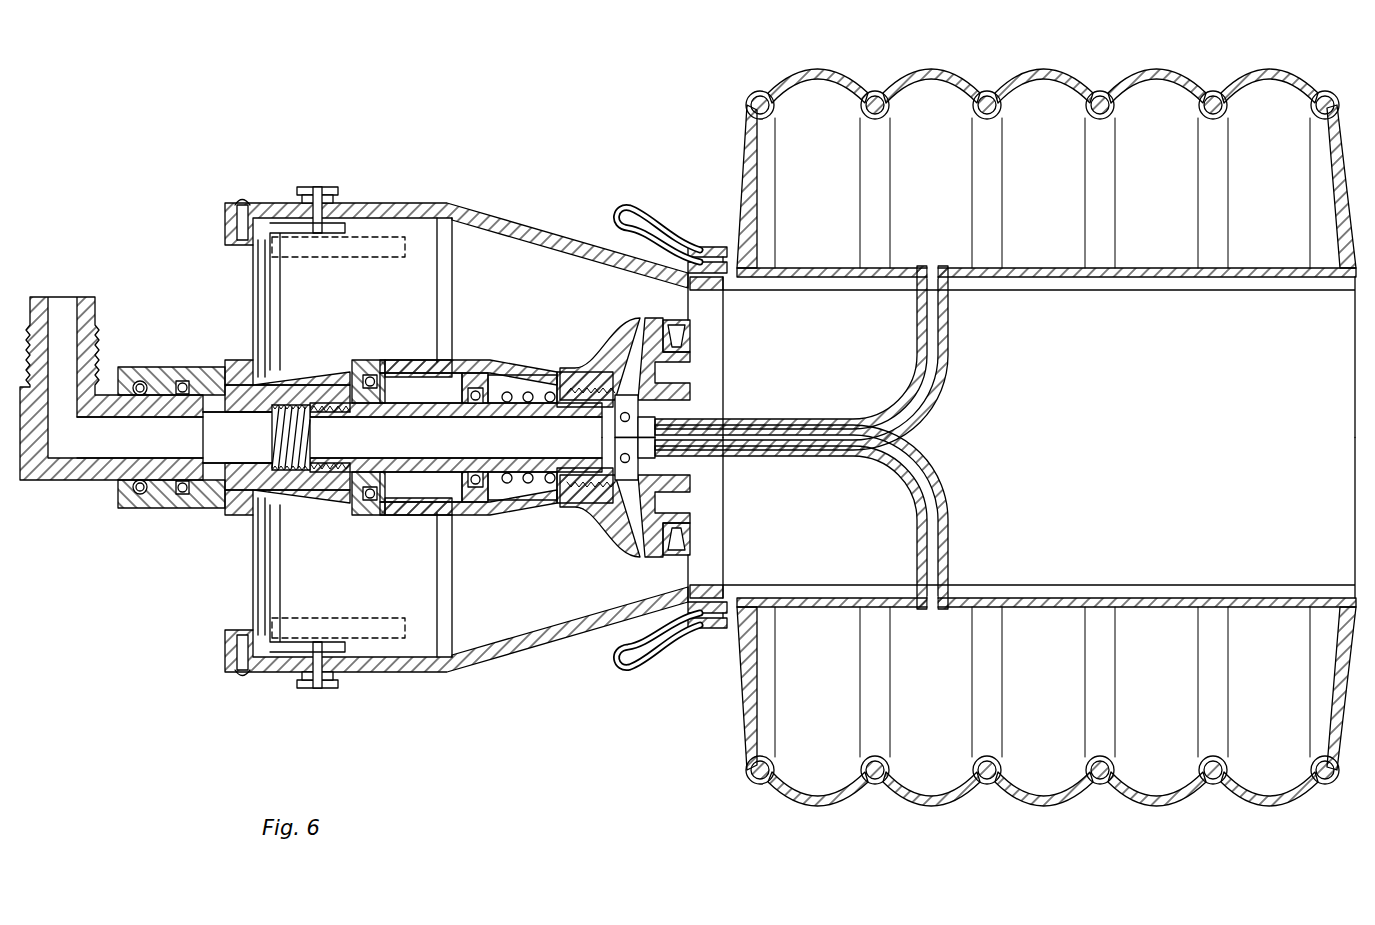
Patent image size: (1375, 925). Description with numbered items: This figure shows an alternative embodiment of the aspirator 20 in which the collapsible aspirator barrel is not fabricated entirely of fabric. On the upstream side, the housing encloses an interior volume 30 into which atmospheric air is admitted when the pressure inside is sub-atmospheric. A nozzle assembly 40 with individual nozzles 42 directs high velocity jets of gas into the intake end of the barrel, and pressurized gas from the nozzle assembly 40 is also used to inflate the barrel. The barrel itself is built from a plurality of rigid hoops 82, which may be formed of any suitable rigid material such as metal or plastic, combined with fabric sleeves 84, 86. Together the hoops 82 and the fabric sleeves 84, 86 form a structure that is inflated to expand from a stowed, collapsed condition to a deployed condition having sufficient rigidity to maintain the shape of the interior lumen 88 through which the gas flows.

The aspirator 20 is at (688, 441).
The interior volume 30 is at (529, 316).
The nozzle assembly 40 is at (615, 345).
The individual nozzle 42 is at (683, 333).
The hoop 82 is at (875, 91).
The fabric sleeve 84 is at (1281, 73).
The fabric sleeve 86 is at (1262, 270).
The interior lumen 88 is at (1133, 456).